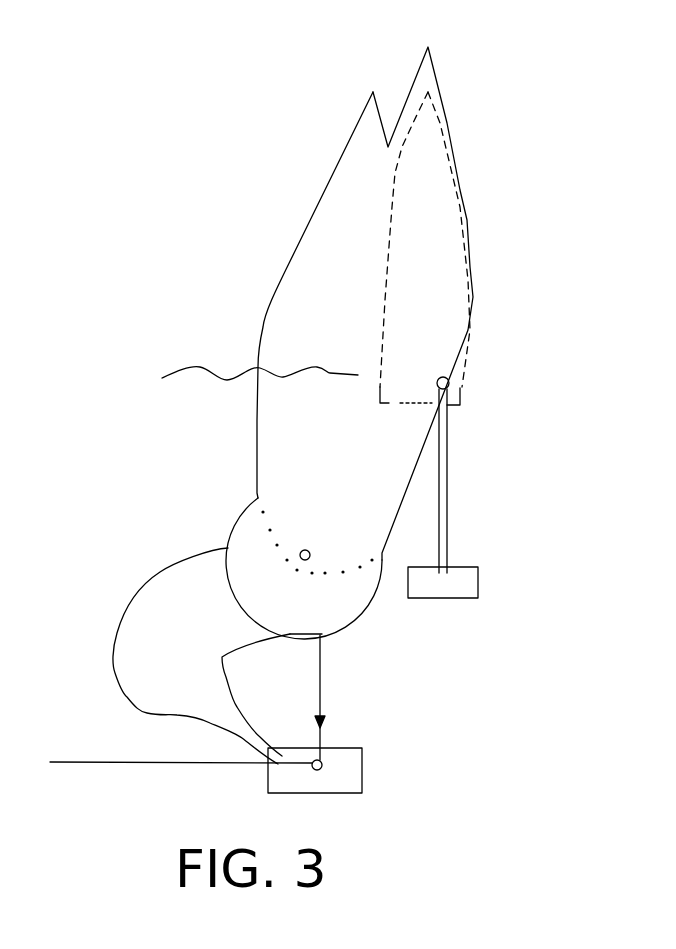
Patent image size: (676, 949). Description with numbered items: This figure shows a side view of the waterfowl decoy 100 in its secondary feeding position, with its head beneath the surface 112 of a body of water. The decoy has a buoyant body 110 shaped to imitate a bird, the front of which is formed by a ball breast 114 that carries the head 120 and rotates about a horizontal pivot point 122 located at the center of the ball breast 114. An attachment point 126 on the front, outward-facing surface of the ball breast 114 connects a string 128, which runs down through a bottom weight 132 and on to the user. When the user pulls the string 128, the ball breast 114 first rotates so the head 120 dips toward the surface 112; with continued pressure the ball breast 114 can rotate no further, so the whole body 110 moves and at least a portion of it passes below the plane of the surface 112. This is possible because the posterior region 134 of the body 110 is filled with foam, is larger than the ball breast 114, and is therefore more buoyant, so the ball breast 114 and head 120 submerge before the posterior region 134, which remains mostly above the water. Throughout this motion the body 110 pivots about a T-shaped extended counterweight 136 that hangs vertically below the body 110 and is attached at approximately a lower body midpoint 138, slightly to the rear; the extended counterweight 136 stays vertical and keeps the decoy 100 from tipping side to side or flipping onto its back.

The waterfowl decoy 100 is at (262, 101).
The body 110 is at (297, 247).
The surface 112 is at (162, 378).
The ball breast 114 is at (245, 535).
The head 120 is at (133, 635).
The horizontal pivot point 122 is at (312, 549).
The attachment point 126 is at (327, 635).
The string 128 is at (325, 673).
The bottom weight 132 is at (340, 783).
The posterior region 134 is at (433, 283).
The T-shaped extended counterweight 136 is at (452, 575).
The lower body midpoint 138 is at (452, 380).